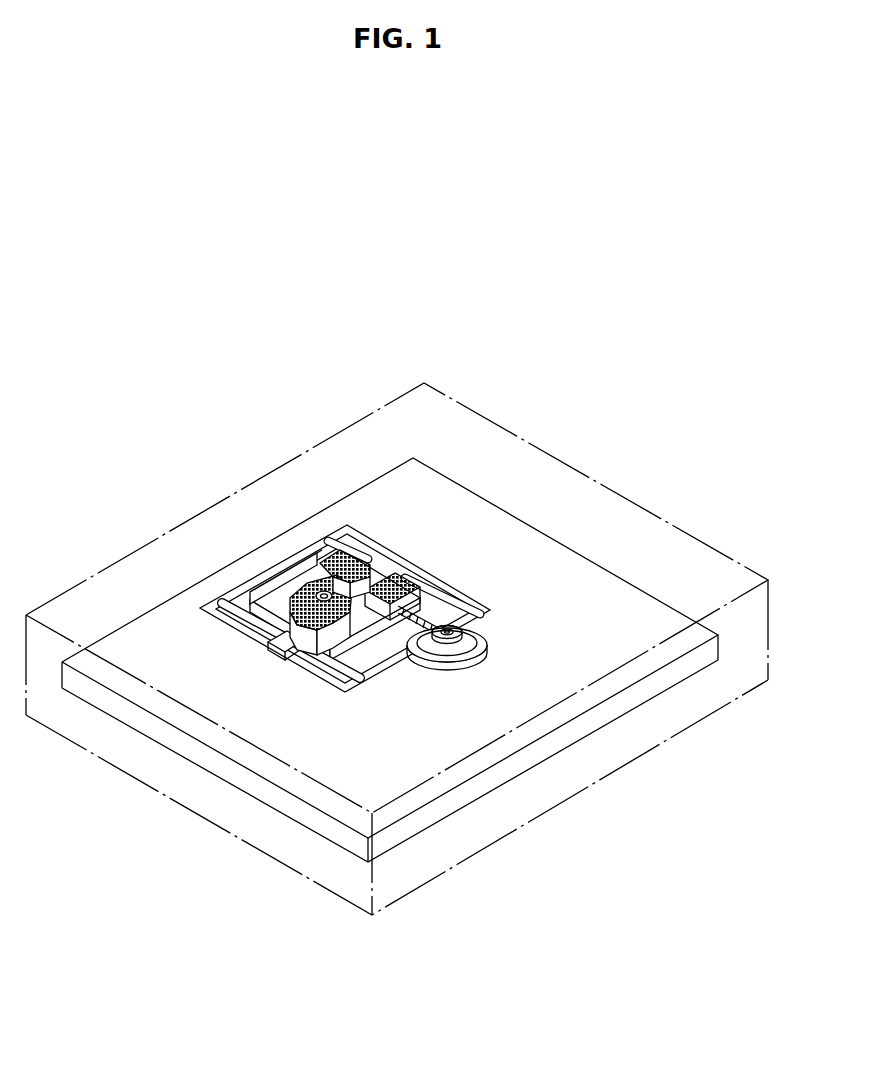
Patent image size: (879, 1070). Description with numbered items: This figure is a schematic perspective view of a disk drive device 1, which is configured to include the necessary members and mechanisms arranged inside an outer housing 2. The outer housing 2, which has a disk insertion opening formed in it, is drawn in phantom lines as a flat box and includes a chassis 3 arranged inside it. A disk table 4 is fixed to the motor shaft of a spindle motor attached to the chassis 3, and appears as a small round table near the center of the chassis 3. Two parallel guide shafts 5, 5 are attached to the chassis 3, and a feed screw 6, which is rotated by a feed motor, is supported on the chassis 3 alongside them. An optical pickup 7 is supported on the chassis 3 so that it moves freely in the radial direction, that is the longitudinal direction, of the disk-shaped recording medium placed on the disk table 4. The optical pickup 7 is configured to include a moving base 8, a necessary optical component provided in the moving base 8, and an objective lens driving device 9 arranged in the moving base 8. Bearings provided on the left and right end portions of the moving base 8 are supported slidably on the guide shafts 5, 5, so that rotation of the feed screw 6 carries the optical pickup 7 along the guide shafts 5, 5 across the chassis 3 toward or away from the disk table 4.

The disk drive device 1 is at (110, 340).
The outer housing 2 is at (658, 517).
The chassis 3 is at (642, 614).
The disk table 4 is at (475, 641).
The guide shaft 5 is at (438, 607).
The feed screw 6 is at (403, 615).
The optical pickup 7 is at (323, 640).
The moving base 8 is at (293, 585).
The objective lens driving device 9 is at (322, 568).